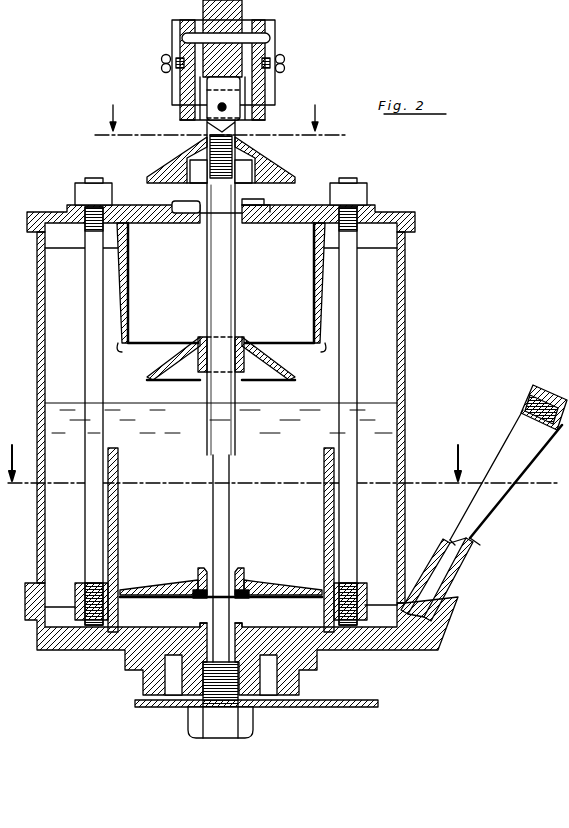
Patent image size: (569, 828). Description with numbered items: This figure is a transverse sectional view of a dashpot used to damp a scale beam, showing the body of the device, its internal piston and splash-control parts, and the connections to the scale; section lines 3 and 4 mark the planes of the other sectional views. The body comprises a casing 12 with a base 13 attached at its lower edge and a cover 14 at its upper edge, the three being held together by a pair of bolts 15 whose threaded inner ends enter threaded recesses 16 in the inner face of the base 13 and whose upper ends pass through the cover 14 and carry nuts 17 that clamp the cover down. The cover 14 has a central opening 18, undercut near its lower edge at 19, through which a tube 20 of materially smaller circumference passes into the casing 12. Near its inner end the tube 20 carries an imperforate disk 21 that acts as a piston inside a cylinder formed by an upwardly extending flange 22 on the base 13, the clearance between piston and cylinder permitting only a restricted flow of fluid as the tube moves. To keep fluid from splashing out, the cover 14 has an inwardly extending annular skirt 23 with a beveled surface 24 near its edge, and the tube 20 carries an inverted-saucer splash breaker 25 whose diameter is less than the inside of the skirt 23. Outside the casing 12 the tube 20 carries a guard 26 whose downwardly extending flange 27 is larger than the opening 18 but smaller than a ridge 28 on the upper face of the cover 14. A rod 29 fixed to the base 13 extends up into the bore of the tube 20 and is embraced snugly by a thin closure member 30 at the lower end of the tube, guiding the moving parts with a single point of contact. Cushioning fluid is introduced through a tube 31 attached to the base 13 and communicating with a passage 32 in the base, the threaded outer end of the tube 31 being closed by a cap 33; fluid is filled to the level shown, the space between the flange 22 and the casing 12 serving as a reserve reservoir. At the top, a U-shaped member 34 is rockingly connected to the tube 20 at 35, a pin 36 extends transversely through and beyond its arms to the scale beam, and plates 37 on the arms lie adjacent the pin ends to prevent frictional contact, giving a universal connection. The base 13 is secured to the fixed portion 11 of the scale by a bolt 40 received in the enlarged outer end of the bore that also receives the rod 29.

The section line 3- 3 is at (220, 131).
The section line 4- 4 is at (283, 474).
The fixed portion 11 is at (135, 704).
The casing 12 is at (405, 368).
The base 13 is at (62, 637).
The cover 14 is at (60, 215).
The bolts 15 is at (357, 318).
The threaded recesses 16 is at (355, 635).
The nuts 17 is at (356, 192).
The central opening 18 is at (196, 205).
The undercut 19 is at (198, 221).
The tube 20 is at (208, 310).
The disk 21 is at (297, 582).
The flange 22 is at (126, 464).
The annular skirt 23 is at (314, 305).
The beveled surface 24 is at (220, 356).
The splash breaker 25 is at (172, 380).
The guard 26 is at (175, 170).
The downwardly extending flange 27 is at (258, 203).
The ridge 28 is at (283, 205).
The rod 29 is at (213, 611).
The closure member 30 is at (240, 599).
The tube 31 is at (505, 503).
The passage 32 is at (410, 625).
The cap 33 is at (541, 390).
The U-shaped member 34 is at (276, 50).
The rocking connection 35 is at (218, 107).
The pin 36 is at (182, 36).
The plates 37 is at (283, 72).
The bolt 40 is at (200, 710).